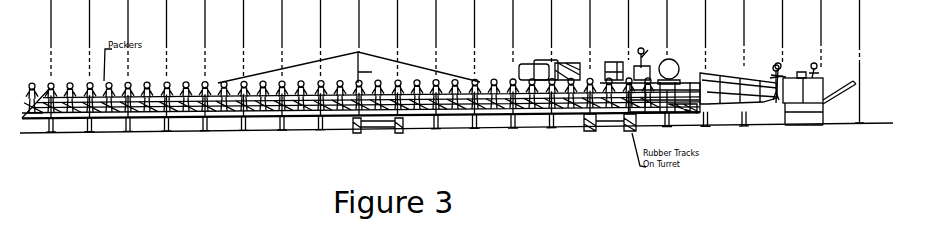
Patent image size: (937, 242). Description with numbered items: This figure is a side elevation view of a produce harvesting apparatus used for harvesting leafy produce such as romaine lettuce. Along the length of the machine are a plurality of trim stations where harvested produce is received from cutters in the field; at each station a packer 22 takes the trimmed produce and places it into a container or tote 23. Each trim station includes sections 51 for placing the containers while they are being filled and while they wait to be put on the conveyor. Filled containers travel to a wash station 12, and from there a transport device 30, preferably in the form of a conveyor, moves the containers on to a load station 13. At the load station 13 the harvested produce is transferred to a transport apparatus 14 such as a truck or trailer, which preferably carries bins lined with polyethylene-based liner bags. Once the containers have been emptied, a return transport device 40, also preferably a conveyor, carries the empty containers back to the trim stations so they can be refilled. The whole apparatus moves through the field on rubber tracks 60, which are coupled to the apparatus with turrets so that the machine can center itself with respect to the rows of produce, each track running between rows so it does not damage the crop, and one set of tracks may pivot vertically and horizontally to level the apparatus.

The wash station 12 is at (679, 51).
The load station 13 is at (758, 59).
The transport apparatus 14 is at (869, 61).
The packer 22 is at (333, 82).
The container or tote 23 is at (190, 82).
The transport device 30 is at (574, 112).
The return transport device 40 is at (417, 137).
The sections 51 is at (238, 118).
The rubber tracks 60 is at (590, 128).